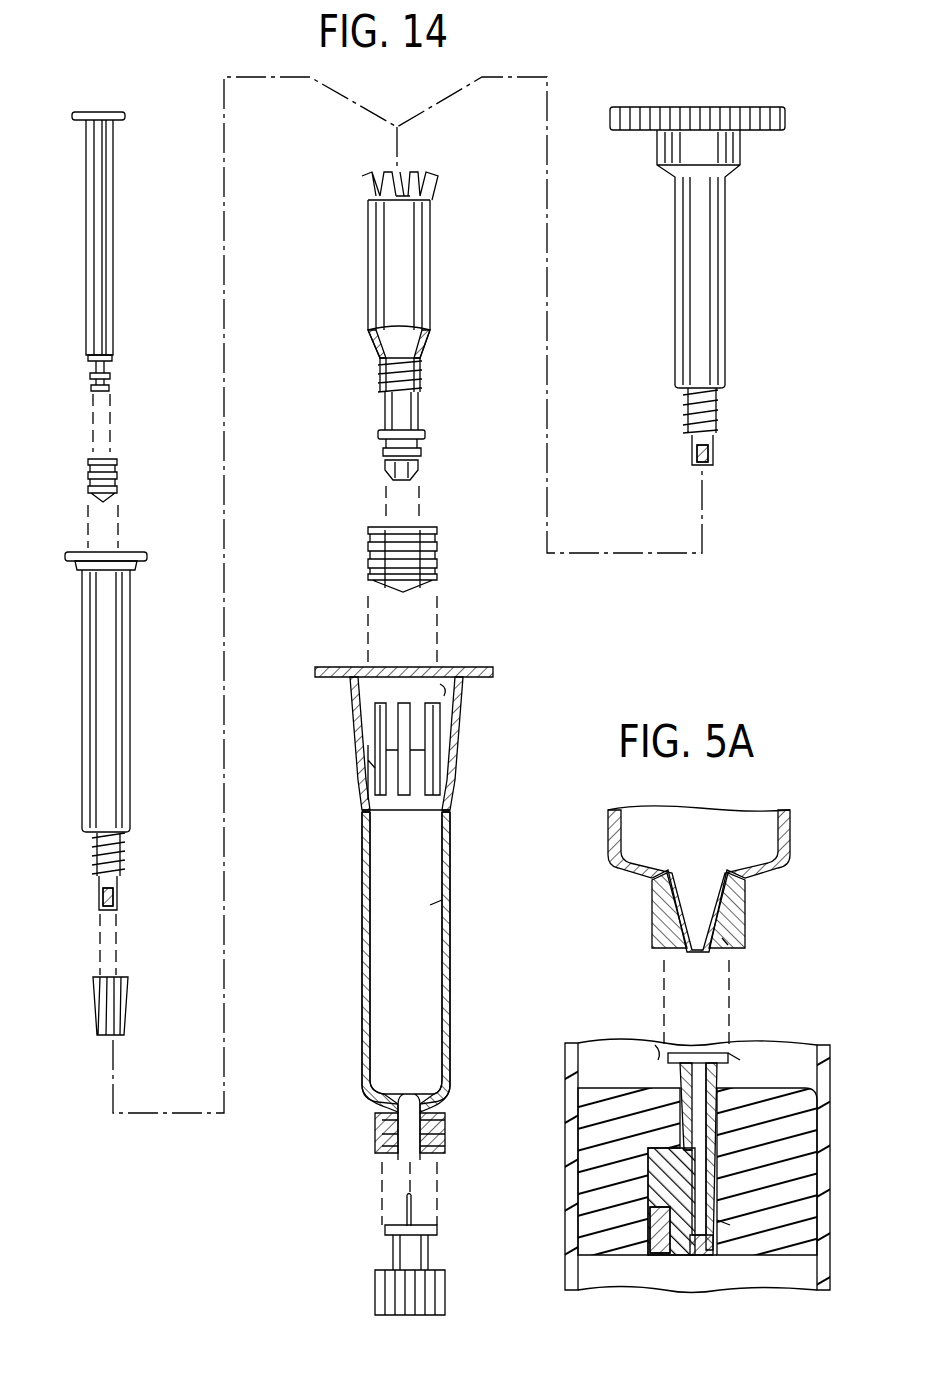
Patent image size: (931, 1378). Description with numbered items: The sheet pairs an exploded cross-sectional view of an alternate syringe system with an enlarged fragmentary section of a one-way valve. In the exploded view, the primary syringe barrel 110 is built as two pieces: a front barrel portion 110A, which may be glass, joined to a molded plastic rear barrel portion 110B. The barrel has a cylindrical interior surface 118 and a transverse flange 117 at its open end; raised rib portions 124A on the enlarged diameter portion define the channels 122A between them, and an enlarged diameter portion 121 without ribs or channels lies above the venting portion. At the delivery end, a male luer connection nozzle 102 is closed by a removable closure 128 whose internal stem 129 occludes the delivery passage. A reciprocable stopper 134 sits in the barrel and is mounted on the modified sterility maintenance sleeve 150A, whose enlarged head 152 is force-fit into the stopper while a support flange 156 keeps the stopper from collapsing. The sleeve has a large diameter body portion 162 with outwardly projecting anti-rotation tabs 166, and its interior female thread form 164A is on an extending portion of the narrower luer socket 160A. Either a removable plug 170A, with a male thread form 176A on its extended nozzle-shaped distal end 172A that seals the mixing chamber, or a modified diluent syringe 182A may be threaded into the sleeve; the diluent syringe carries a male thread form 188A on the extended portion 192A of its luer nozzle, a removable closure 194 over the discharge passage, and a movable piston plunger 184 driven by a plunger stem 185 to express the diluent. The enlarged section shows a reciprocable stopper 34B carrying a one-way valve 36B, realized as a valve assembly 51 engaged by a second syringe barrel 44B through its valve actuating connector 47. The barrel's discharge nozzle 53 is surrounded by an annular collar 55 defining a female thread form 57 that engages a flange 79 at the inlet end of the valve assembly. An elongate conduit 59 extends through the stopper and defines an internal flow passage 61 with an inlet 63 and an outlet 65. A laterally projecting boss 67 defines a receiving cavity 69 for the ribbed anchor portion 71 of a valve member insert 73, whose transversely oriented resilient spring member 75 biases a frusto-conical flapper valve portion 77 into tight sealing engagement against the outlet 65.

In FIG. 14, the plunger stem 185 is at (86, 218).
In FIG. 14, the movable piston plunger 184 is at (88, 475).
In FIG. 14, the modified second diluent syringe 182A is at (82, 715).
In FIG. 14, the male thread form 188A is at (92, 858).
In FIG. 14, the extended portion of the narrower luer nozzle 192A is at (97, 902).
In FIG. 14, the removable closure 194 is at (94, 995).
In FIG. 14, the anti-rotation tab 166 is at (382, 175).
In FIG. 14, the large diameter body portion 162 is at (368, 268).
In FIG. 14, the modified sterility maintenance sleeve 150A is at (368, 330).
In FIG. 14, the narrower luer socket 160A is at (380, 378).
In FIG. 14, the interior female thread form 164A is at (416, 372).
In FIG. 14, the support flange 156 is at (380, 432).
In FIG. 14, the enlarged head 152 is at (385, 462).
In FIG. 14, the reciprocable stopper 134 is at (372, 552).
In FIG. 14, the transverse flange 117 is at (322, 668).
In FIG. 14, the enlarged diameter portion 121 is at (468, 698).
In FIG. 14, the channels 122A is at (420, 738).
In FIG. 14, the raised rib portions 124A is at (368, 762).
In FIG. 14, the rear barrel portion 110B is at (458, 808).
In FIG. 14, the cylindrical interior surface 118 is at (432, 908).
In FIG. 14, the front barrel portion 110A is at (366, 912).
In FIG. 14, the primary syringe barrel 110 is at (366, 1008).
In FIG. 14, the male luer connection nozzle 102 is at (385, 1148).
In FIG. 14, the internal stem 129 is at (404, 1206).
In FIG. 14, the removable closure 128 is at (378, 1290).
In FIG. 14, the removable plug 170A is at (724, 296).
In FIG. 14, the male thread form 176A is at (720, 412).
In FIG. 14, the extended nozzle-shaped distal end 172A is at (712, 447).
In FIG. 5A, the valve actuating connector 47 is at (612, 905).
In FIG. 5A, the second syringe barrel 44B is at (608, 843).
In FIG. 5A, the discharge nozzle 53 is at (662, 948).
In FIG. 5A, the annular collar 55 is at (738, 905).
In FIG. 5A, the female thread form 57 is at (725, 938).
In FIG. 5A, the elongate conduit 59 is at (655, 1045).
In FIG. 5A, the internal flow passage 61 is at (684, 1150).
In FIG. 5A, the inlet 63 is at (712, 1065).
In FIG. 5A, the flange 79 is at (740, 1060).
In FIG. 5A, the reciprocable stopper 34B is at (600, 1085).
In FIG. 5A, the one-way valve 36B is at (572, 1300).
In FIG. 5A, the valve assembly 51 is at (838, 1088).
In FIG. 5A, the laterally projecting boss 67 is at (657, 1167).
In FIG. 5A, the receiving cavity 69 is at (663, 1200).
In FIG. 5A, the ribbed anchor portion 71 is at (693, 1227).
In FIG. 5A, the valve member insert 73 is at (648, 1262).
In FIG. 5A, the spring member 75 is at (677, 1258).
In FIG. 5A, the outlet 65 is at (700, 1240).
In FIG. 5A, the flapper valve portion 77 is at (730, 1225).